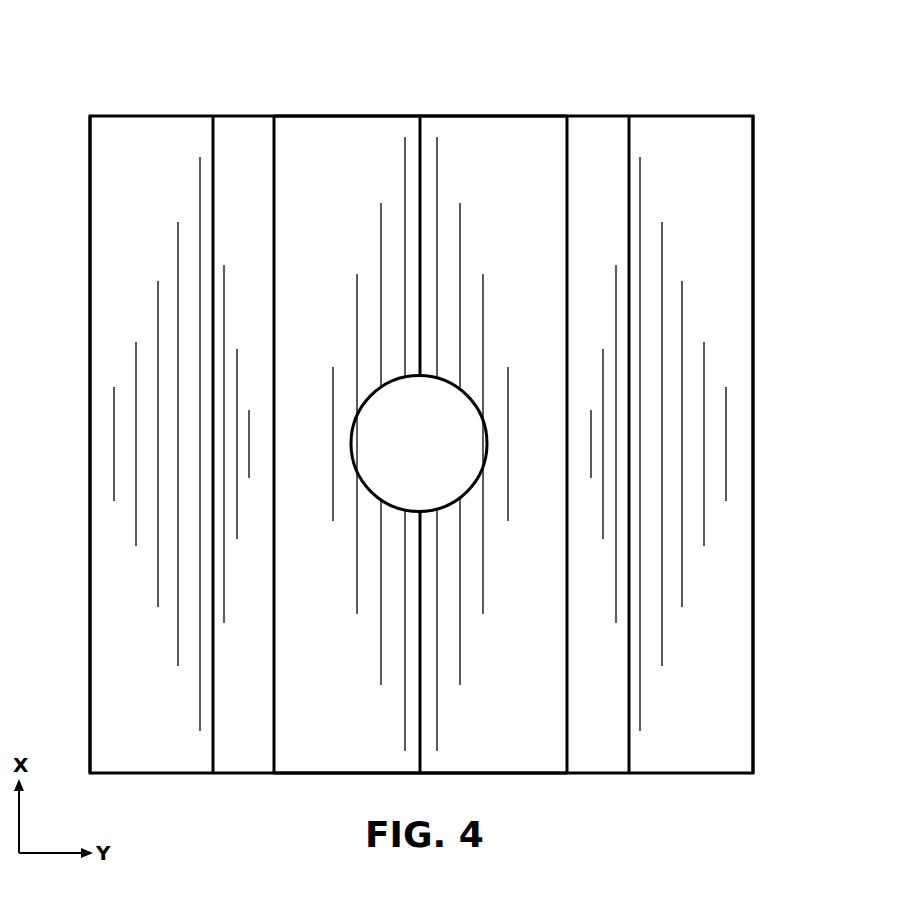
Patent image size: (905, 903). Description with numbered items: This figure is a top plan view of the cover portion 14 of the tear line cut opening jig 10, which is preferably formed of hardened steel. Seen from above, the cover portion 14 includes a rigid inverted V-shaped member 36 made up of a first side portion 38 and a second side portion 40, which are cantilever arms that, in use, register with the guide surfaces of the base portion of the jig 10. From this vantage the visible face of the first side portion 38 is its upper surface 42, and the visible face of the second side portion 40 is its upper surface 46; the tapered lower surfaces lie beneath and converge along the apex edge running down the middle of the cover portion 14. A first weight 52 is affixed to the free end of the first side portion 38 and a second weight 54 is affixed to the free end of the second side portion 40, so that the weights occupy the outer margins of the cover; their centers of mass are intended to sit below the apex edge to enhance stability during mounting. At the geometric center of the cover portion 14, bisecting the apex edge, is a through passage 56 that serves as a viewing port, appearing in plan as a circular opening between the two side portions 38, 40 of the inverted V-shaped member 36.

The tear line cut opening jig 10 is at (792, 90).
The cover portion 14 is at (327, 108).
The rigid inverted V-shaped member 36 is at (514, 108).
The first weight 52 is at (109, 178).
The second weight 54 is at (723, 680).
The through passage 56 is at (428, 377).
The first side portion 38 is at (310, 750).
The upper surface of first side portion 42 is at (347, 752).
The upper surface of second side portion 46 is at (489, 752).
The second side portion 40 is at (526, 750).